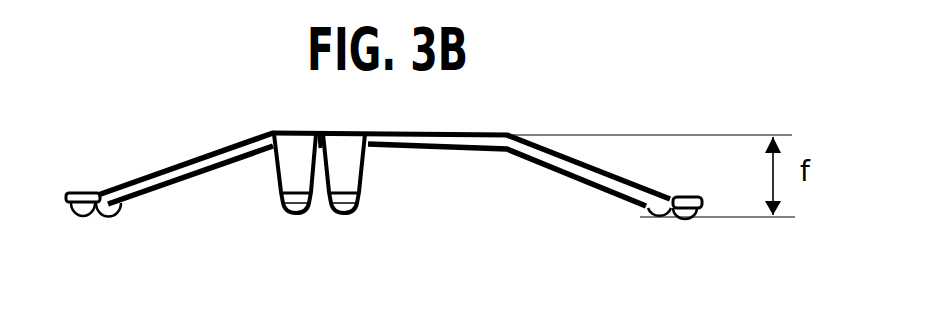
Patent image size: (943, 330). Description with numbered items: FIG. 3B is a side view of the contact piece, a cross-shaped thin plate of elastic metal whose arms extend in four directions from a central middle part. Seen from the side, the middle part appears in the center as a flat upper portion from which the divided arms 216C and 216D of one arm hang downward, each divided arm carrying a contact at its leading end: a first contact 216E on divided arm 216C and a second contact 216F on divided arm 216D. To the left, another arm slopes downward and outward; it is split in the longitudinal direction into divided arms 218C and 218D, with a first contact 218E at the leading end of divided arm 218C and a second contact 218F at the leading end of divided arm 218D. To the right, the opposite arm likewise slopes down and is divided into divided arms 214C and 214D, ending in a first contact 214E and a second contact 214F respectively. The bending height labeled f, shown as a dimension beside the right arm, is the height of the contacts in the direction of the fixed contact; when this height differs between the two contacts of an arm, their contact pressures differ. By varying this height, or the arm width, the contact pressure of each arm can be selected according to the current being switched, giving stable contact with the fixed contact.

The divided arm 214C is at (633, 182).
The divided arm 214D is at (580, 175).
The first contact 214E is at (693, 218).
The second contact 214F is at (651, 218).
The divided arm 216C is at (355, 168).
The divided arm 216D is at (292, 168).
The first contact 216E is at (343, 210).
The second contact 216F is at (297, 210).
The divided arm 218C is at (127, 182).
The divided arm 218D is at (192, 181).
The first contact 218E is at (79, 217).
The second contact 218F is at (110, 217).